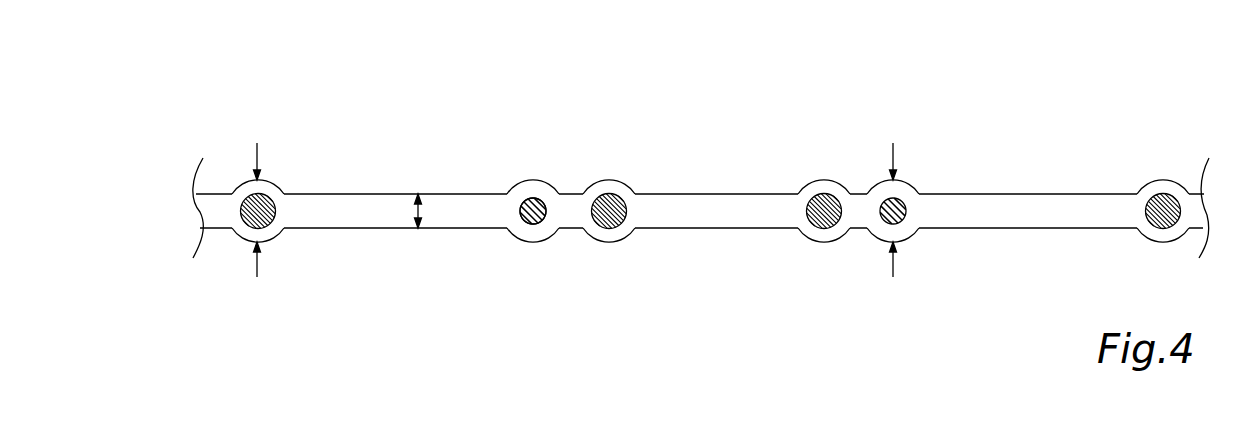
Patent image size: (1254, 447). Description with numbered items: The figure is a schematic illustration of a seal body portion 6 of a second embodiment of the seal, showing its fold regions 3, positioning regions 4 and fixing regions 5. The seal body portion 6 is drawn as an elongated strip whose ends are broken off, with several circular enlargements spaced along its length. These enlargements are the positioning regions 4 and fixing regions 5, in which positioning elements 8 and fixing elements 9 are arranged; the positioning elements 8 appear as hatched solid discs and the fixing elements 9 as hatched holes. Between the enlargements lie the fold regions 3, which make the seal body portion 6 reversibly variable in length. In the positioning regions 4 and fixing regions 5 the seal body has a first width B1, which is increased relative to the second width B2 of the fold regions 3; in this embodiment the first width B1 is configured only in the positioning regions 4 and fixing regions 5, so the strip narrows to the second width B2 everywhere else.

The fold regions 3 is at (385, 215).
The positioning regions 4 is at (269, 186).
The fixing regions 5 is at (525, 188).
The seal body portion 6 is at (1004, 133).
The positioning elements 8 is at (252, 195).
The fixing elements 9 is at (536, 223).
The first width B1 is at (277, 217).
The second width B2 is at (422, 212).